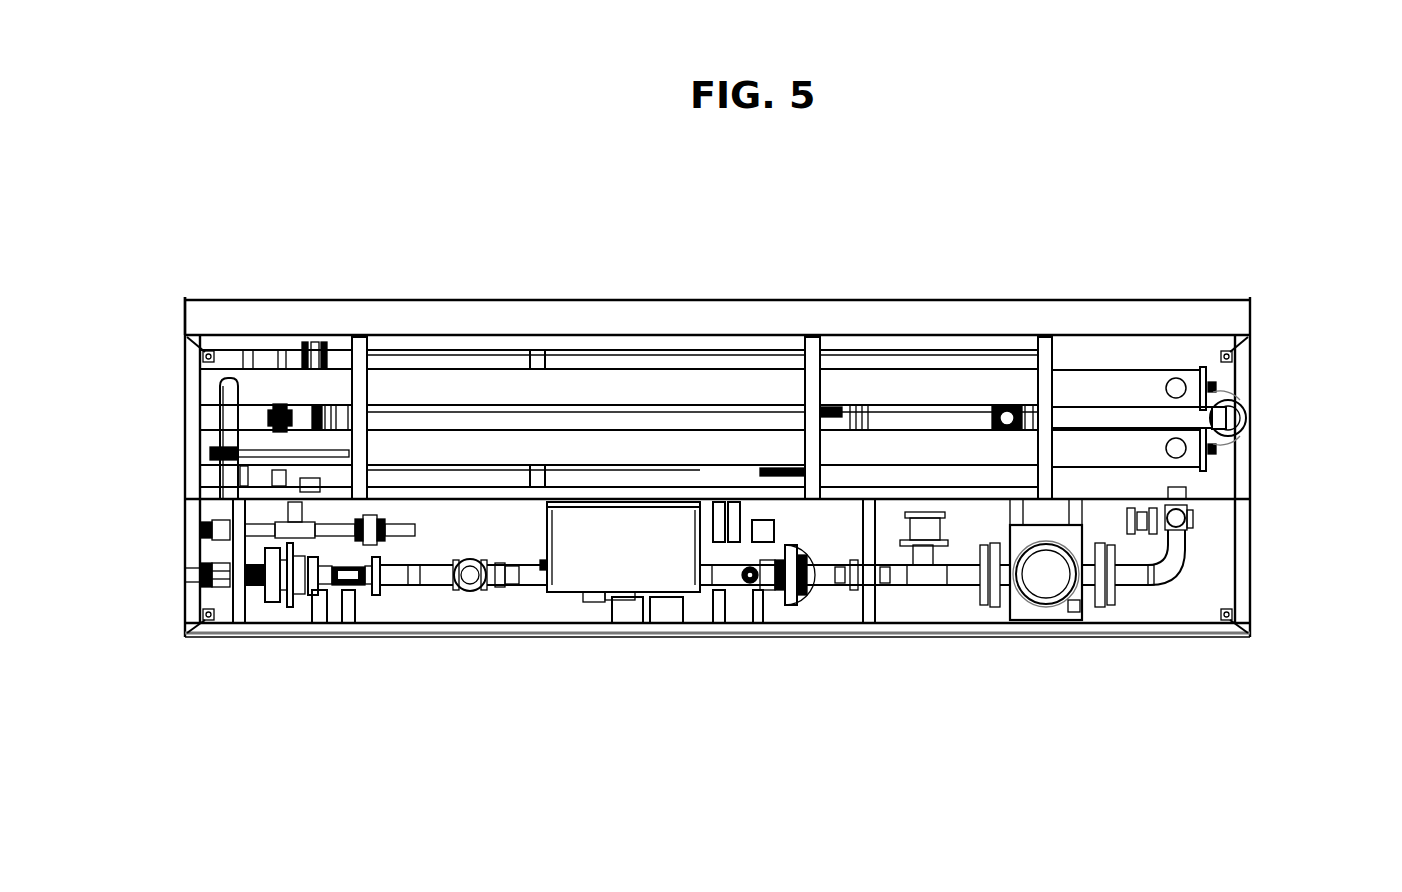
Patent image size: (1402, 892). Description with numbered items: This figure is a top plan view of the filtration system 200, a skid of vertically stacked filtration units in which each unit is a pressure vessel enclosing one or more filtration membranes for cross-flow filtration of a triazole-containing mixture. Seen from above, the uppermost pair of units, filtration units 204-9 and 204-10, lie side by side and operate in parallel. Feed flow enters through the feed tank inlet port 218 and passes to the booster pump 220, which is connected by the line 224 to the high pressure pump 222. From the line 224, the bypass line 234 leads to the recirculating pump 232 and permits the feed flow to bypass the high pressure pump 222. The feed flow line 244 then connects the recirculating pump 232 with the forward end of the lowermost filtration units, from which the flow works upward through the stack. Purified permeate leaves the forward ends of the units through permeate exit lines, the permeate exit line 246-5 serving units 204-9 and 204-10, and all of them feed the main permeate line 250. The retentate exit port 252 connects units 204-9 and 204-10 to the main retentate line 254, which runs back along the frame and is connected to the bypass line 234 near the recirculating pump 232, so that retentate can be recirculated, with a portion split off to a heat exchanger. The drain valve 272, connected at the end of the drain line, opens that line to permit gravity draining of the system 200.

The filtration system 200 is at (721, 495).
The filtration unit 204-9 is at (1095, 383).
The filtration unit 204-10 is at (1118, 450).
The feed tank inlet port 218 is at (190, 578).
The booster pump 220 is at (333, 590).
The high pressure pump 222 is at (735, 592).
The line 224 is at (423, 578).
The recirculating pump 232 is at (1036, 578).
The bypass line 234 is at (838, 576).
The feed flow line 244 is at (1160, 568).
The permeate exit line 246-5 is at (1220, 384).
The main permeate line 250 is at (905, 416).
The retentate exit port 252 is at (226, 392).
The main retentate line 254 is at (440, 364).
The drain valve 272 is at (206, 530).